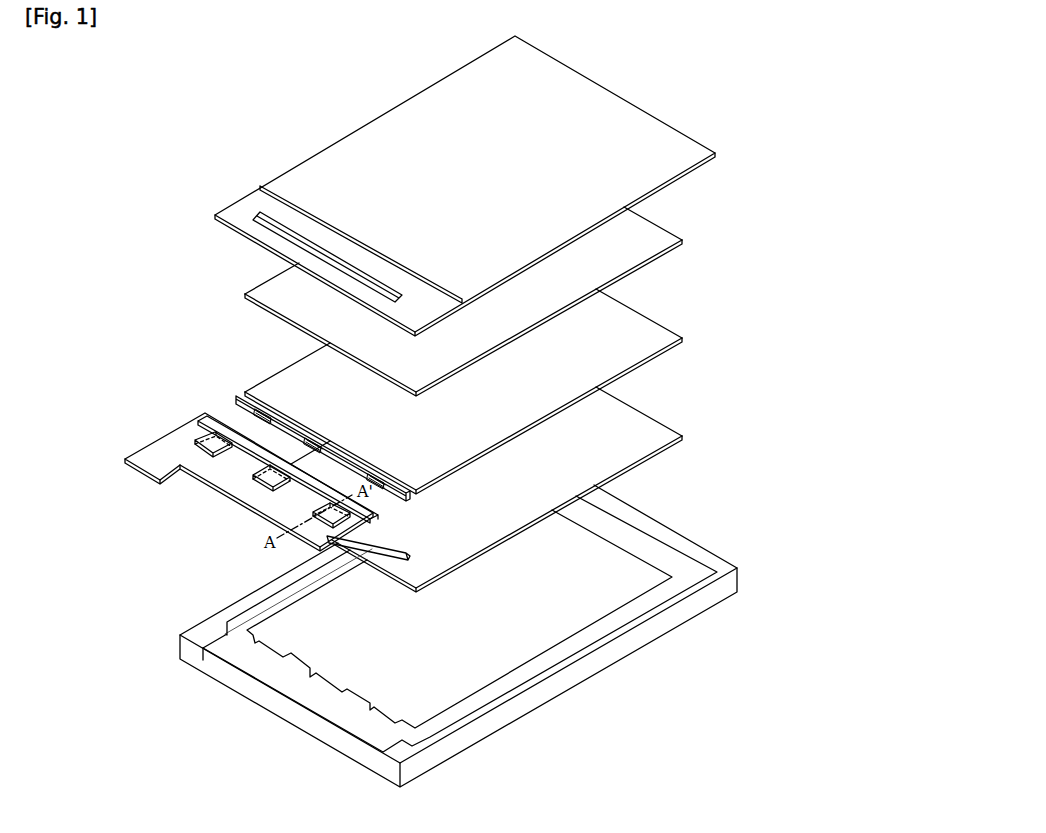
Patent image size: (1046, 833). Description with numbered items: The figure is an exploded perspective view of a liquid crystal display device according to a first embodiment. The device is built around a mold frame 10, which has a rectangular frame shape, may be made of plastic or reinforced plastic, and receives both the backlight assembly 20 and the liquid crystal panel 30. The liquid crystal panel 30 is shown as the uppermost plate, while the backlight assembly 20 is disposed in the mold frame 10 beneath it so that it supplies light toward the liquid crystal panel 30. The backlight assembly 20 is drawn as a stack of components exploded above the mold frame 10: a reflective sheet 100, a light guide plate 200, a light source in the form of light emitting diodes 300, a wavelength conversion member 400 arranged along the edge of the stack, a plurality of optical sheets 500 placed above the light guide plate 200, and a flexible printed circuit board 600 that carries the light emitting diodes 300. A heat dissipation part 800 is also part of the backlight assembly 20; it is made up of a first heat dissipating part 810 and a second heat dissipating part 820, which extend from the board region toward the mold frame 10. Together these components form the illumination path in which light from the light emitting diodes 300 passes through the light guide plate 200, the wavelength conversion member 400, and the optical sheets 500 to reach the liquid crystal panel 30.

The mold frame 10 is at (192, 624).
The backlight assembly 20 is at (66, 344).
The liquid crystal panel 30 is at (295, 180).
The reflective sheet 100 is at (317, 463).
The light guide plate 200 is at (205, 449).
The light emitting diodes 300 is at (214, 455).
The wavelength conversion member 400 is at (278, 396).
The optical sheets 500 is at (312, 314).
The flexible printed circuit board 600 is at (210, 425).
The heat dissipation part 800 is at (113, 538).
The first heat dissipating part 810 is at (315, 549).
The second heat dissipating part 820 is at (378, 556).